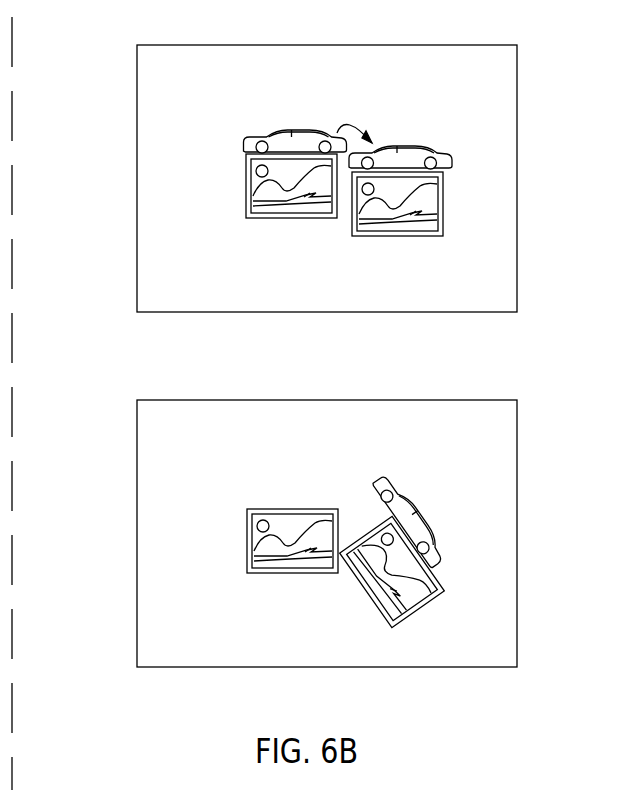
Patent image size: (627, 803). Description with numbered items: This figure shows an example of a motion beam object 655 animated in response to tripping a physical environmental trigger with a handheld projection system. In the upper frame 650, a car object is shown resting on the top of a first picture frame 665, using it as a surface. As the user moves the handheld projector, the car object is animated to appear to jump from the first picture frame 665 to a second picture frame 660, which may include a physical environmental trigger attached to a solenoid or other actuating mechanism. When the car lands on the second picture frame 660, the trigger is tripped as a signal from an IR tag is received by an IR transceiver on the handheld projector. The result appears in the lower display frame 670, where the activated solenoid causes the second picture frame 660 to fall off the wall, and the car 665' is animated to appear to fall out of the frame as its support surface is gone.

The frame 650 is at (517, 182).
The motion beam object 655 is at (291, 130).
The second picture frame 660 is at (397, 237).
The first picture frame 665 is at (292, 392).
The car 665' is at (417, 512).
The display frame 670 is at (517, 537).